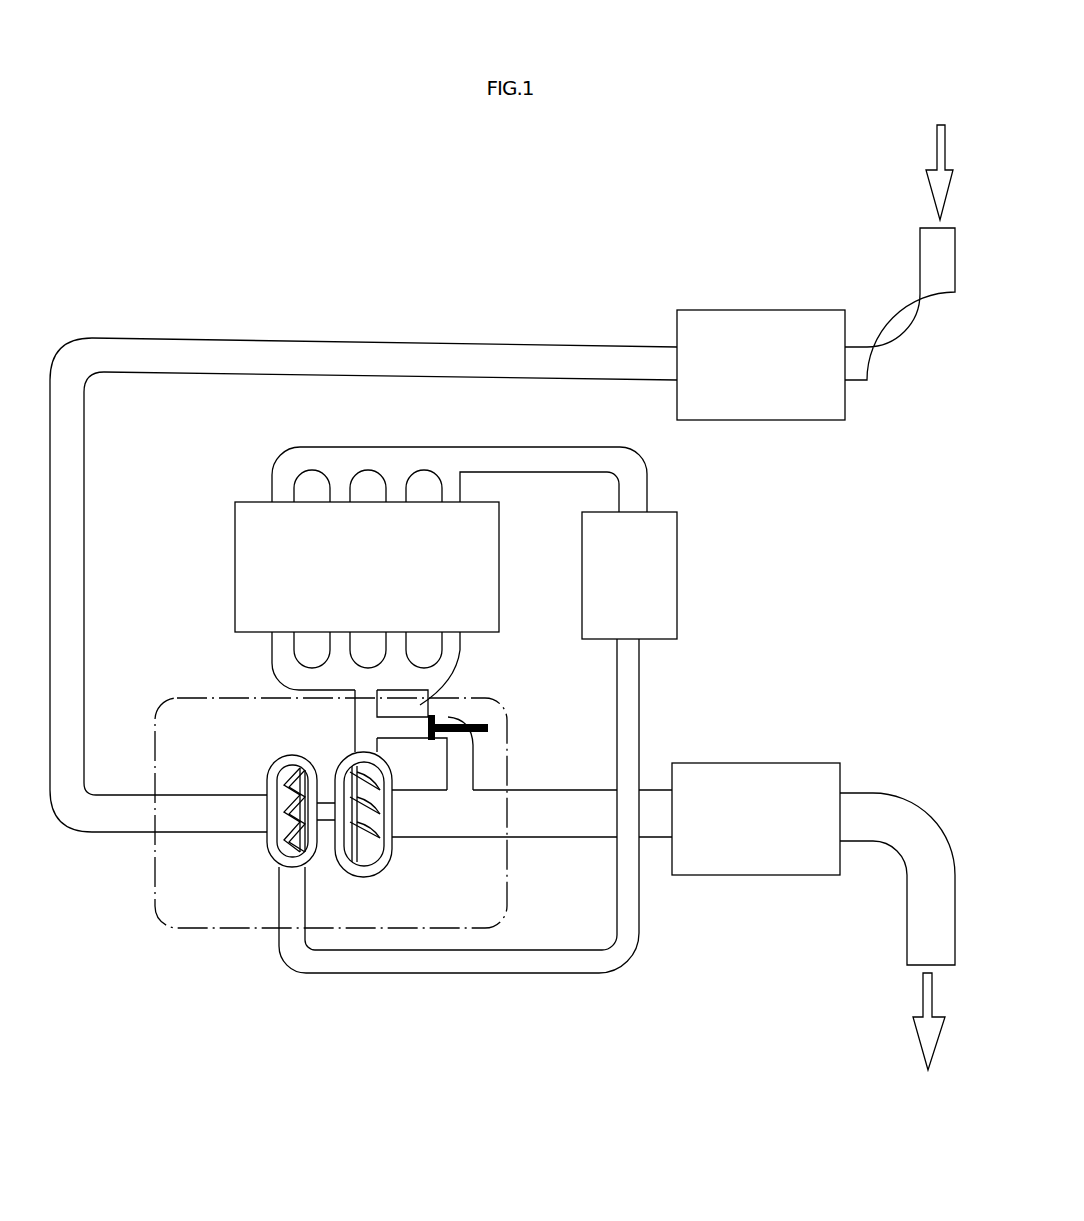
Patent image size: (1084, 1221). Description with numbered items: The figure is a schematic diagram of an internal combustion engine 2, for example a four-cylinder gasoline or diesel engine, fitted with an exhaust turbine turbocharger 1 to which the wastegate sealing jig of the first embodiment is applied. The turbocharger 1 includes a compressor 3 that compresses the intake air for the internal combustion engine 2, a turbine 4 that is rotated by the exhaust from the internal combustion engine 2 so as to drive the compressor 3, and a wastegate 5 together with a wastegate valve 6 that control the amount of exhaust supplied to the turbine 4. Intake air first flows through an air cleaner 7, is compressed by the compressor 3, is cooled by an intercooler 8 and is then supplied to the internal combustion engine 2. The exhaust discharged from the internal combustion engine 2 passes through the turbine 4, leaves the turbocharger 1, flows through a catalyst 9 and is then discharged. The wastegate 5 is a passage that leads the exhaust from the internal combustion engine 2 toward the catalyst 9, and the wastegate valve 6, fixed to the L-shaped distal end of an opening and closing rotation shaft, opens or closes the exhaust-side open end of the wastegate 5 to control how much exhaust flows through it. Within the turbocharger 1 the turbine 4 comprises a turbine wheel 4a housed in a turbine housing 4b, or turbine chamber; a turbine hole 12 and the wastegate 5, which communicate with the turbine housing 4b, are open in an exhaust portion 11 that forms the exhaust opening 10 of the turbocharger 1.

The exhaust turbine turbocharger 1 is at (207, 931).
The internal combustion engine 2 is at (365, 583).
The compressor 3 is at (278, 772).
The turbine 4 is at (427, 898).
The turbine wheel 4a is at (372, 840).
The turbine housing 4b is at (383, 880).
The wastegate 5 is at (422, 703).
The wastegate valve 6 is at (512, 766).
The air cleaner 7 is at (747, 377).
The intercooler 8 is at (620, 586).
The catalyst 9 is at (743, 833).
The exhaust opening 10 is at (495, 818).
The exhaust portion 11 is at (485, 838).
The turbine hole 12 is at (430, 815).